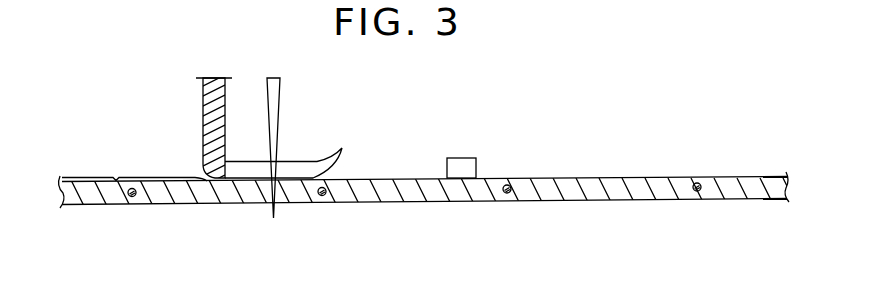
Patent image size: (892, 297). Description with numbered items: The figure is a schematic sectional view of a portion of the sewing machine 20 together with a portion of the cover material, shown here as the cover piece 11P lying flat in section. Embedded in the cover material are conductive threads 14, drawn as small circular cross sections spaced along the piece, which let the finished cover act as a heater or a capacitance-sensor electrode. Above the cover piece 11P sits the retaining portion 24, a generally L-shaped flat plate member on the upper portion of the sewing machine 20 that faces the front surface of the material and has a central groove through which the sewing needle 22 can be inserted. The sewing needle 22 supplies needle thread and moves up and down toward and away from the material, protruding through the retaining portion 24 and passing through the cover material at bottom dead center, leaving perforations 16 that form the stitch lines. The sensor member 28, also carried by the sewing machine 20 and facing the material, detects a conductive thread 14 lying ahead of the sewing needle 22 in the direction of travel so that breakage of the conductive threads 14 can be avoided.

The cover piece 11P is at (640, 187).
The perforations 16 is at (80, 177).
The conductive threads 14 is at (133, 196).
The sewing machine 20 is at (330, 144).
The retaining portion 24 is at (212, 118).
The sewing needle 22 is at (278, 100).
The sensor member 28 is at (465, 168).